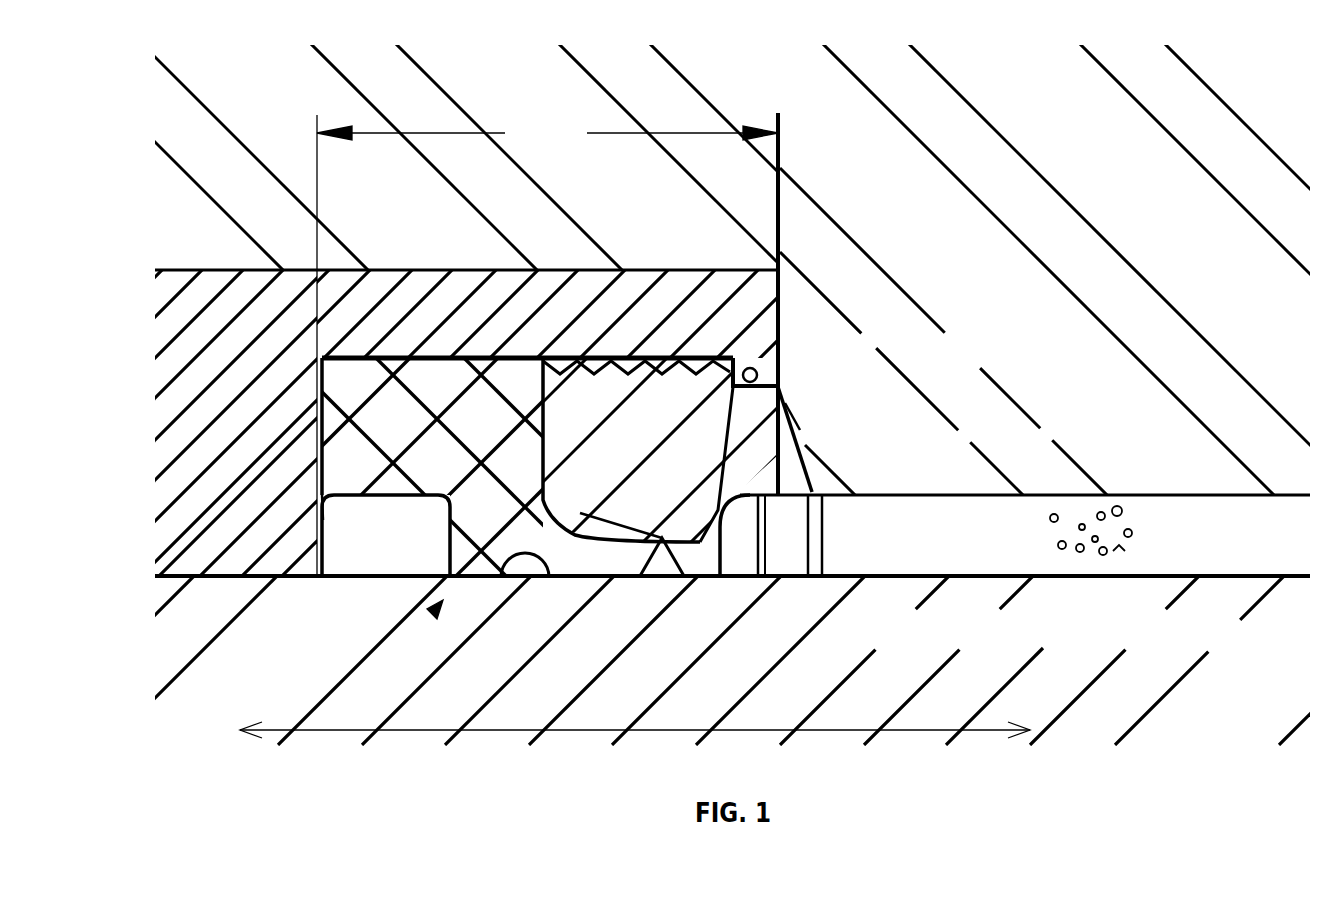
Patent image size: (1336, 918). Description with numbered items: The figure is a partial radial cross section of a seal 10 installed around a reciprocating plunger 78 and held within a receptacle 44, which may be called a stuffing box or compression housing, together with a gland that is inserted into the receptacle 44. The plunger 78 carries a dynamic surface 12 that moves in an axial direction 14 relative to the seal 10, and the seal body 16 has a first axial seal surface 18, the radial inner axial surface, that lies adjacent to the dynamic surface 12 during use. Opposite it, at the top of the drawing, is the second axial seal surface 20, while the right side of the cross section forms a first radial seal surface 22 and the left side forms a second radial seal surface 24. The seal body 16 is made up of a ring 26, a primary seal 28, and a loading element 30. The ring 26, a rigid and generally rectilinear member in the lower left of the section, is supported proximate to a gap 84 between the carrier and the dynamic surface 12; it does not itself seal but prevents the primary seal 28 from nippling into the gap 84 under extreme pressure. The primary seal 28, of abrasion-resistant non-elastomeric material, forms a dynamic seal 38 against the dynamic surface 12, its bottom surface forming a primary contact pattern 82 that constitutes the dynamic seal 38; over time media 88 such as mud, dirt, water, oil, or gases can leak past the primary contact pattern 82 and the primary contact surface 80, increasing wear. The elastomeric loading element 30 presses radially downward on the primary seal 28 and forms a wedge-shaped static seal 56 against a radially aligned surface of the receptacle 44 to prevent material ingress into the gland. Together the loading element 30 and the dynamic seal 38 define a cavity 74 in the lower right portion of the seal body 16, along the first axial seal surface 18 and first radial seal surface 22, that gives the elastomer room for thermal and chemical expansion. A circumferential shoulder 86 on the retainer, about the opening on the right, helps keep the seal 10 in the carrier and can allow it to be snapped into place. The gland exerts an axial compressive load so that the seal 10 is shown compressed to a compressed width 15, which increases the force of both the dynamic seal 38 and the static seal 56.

The seal 10 is at (249, 359).
The dynamic surface 12 is at (905, 576).
The axial direction 14 is at (441, 735).
The compressed width 15 is at (547, 128).
The seal body 16 is at (436, 610).
The first axial seal surface 18 is at (690, 582).
The second axial seal surface 20 is at (483, 355).
The first radial seal surface 22 is at (798, 436).
The second radial seal surface 24 is at (273, 580).
The ring 26 is at (399, 555).
The primary seal 28 is at (409, 427).
The loading element 30 is at (633, 446).
The dynamic seal 38 is at (633, 585).
The receptacle 44 is at (926, 219).
The static seal 56 is at (803, 453).
The cavity 74 is at (727, 583).
The plunger 78 is at (798, 661).
The primary contact surface 80 is at (730, 583).
The primary contact pattern 82 is at (550, 583).
The gap 84 is at (320, 520).
The circumferential shoulder 86 is at (779, 372).
The media 88 is at (1127, 503).